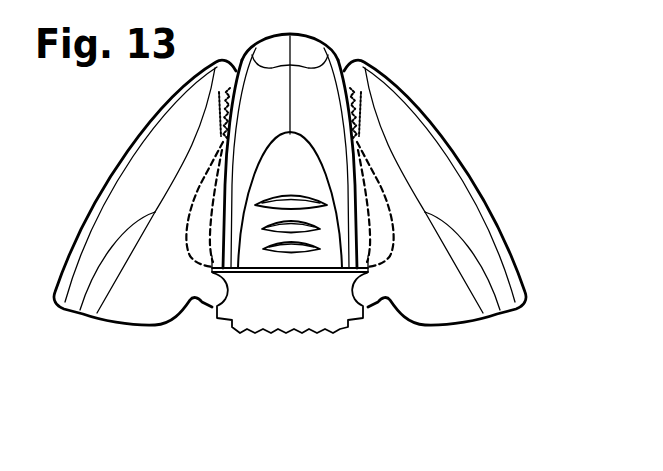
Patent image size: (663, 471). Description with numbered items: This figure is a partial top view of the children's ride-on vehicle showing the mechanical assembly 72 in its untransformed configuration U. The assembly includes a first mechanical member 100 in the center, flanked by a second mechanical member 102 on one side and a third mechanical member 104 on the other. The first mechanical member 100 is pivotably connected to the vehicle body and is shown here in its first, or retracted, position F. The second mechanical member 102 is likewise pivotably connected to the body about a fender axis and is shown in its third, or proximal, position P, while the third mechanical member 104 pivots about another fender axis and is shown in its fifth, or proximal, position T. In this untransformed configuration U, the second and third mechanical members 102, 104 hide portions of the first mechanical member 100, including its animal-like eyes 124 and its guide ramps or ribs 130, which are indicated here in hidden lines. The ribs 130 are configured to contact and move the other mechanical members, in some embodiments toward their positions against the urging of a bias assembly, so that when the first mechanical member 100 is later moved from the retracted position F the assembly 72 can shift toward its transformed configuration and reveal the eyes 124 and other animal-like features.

The first mechanical member 100 is at (307, 71).
The first (or retracted) position F is at (320, 108).
The mechanical assembly 72 is at (486, 56).
The second mechanical member 102 is at (123, 200).
The third mechanical member 104 is at (460, 200).
The untransformed configuration U is at (168, 135).
The third (or proximal) position P is at (100, 247).
The fifth (or proximal) position T is at (462, 257).
The guide ramps or ribs 130 is at (200, 190).
The eyes 124 is at (200, 237).